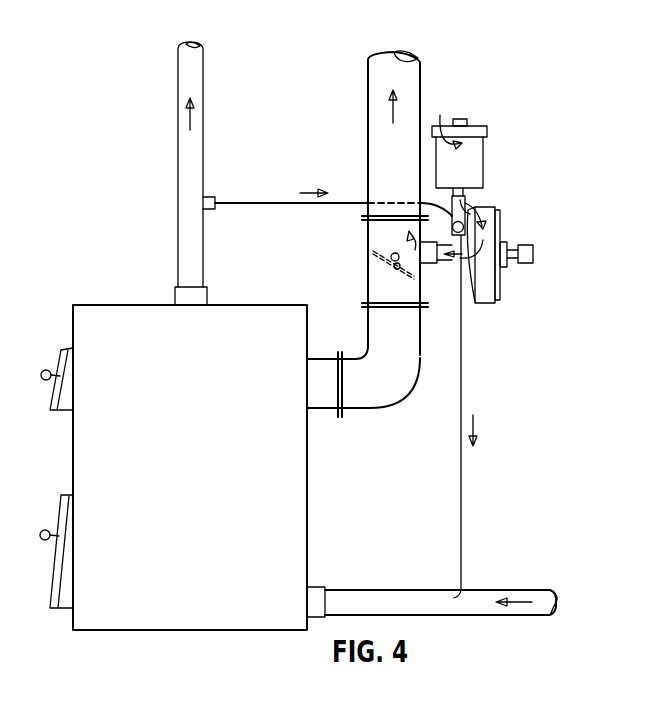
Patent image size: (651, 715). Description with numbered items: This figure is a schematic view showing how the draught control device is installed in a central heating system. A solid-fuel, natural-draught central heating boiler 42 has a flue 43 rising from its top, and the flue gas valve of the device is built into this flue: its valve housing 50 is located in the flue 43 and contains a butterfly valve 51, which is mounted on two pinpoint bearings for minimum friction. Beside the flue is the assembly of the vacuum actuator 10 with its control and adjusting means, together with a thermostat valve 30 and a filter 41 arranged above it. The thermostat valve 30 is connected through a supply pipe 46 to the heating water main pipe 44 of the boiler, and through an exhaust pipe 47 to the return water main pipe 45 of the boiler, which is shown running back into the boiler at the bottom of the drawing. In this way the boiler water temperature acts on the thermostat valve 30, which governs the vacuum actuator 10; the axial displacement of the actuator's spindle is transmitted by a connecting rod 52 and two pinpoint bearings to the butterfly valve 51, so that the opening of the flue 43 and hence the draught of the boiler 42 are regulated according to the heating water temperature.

The vacuum actuator 10 is at (501, 222).
The thermostat valve 30 is at (471, 202).
The filter 41 is at (484, 156).
The central heating boiler 42 is at (129, 319).
The flue 43 is at (377, 140).
The heating water main pipe 44 is at (187, 160).
The return pipe 45 is at (407, 600).
The supply pipe 46 is at (297, 204).
The exhaust pipe 47 is at (460, 479).
The valve housing 50 is at (366, 290).
The butterfly valve 51 is at (387, 259).
The connecting rod 52 is at (413, 256).